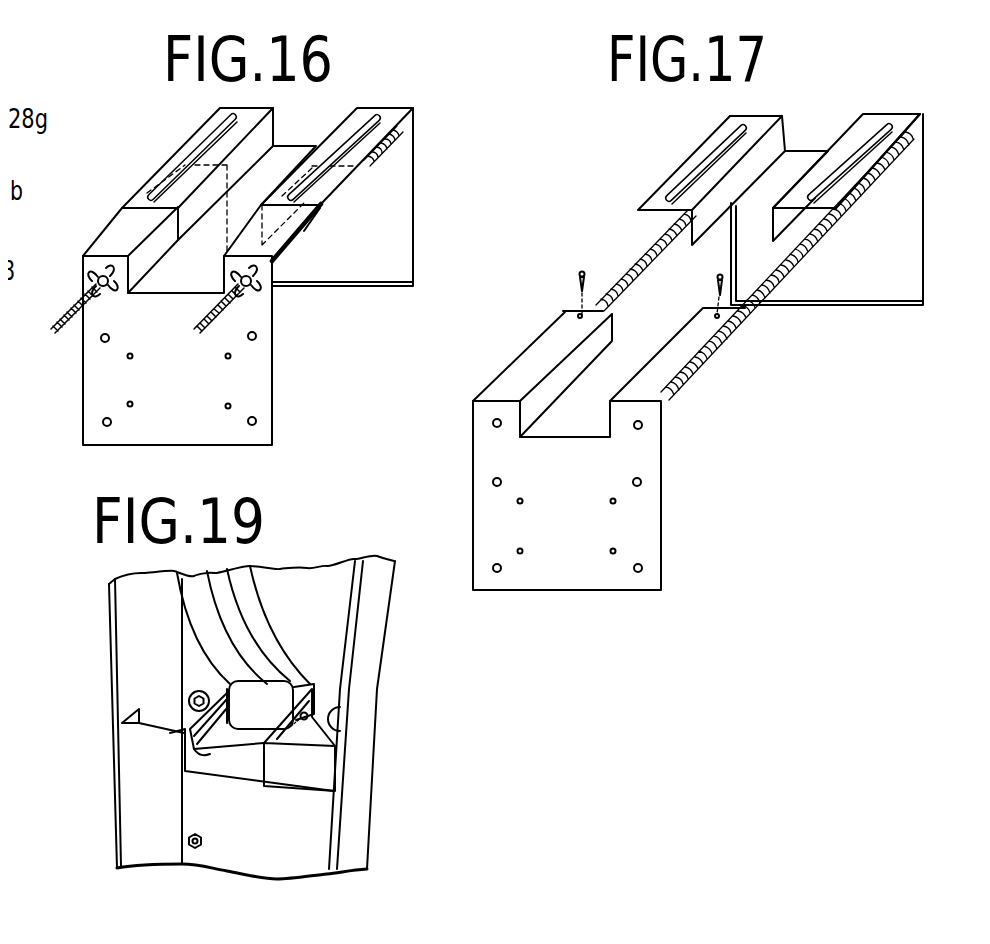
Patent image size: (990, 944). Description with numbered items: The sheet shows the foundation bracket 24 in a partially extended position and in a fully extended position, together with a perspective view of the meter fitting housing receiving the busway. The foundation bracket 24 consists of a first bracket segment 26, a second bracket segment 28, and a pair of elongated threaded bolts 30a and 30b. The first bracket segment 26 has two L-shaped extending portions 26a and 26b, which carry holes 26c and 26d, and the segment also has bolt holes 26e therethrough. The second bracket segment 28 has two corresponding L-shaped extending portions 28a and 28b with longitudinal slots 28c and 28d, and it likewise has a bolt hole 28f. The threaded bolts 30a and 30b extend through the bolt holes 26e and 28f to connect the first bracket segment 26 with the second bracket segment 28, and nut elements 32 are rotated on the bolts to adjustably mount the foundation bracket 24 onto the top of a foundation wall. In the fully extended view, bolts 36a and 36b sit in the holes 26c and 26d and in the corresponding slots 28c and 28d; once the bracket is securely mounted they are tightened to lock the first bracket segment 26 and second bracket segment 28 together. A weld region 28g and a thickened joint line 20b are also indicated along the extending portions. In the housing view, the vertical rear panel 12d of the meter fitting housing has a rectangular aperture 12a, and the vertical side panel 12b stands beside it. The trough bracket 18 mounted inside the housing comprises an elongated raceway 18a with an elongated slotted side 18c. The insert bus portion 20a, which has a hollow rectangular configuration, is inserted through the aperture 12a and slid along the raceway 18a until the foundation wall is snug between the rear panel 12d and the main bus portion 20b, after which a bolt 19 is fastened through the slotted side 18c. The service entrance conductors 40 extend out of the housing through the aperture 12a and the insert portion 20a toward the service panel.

In FIG. 19, the rectangular aperture 12a is at (297, 690).
In FIG. 19, the vertical side panel 12b is at (155, 672).
In FIG. 19, the vertical rear panel 12d is at (282, 850).
In FIG. 19, the trough bracket 18 is at (155, 750).
In FIG. 19, the elongated raceway 18a is at (247, 758).
In FIG. 19, the elongated slotted side 18c is at (280, 741).
In FIG. 19, the bolt 19 is at (307, 719).
In FIG. 19, the insert bus portion 20a is at (277, 711).
In FIG. 16, the main bus portion 20b is at (264, 262).
In FIG. 16, the foundation bracket 24 is at (139, 185).
In FIG. 16, the first bracket segment 26 is at (248, 372).
In FIG. 17, the first bracket segment 26 is at (490, 472).
In FIG. 16, the L-shaped extending portion 26a is at (115, 243).
In FIG. 17, the L-shaped extending portion 26a is at (533, 380).
In FIG. 17, the L-shaped extending portion 26b is at (683, 358).
In FIG. 17, the hole 26c is at (573, 317).
In FIG. 17, the hole 26d is at (718, 320).
In FIG. 17, the bolt hole 26e is at (640, 428).
In FIG. 16, the second bracket segment 28 is at (390, 210).
In FIG. 17, the second bracket segment 28 is at (900, 237).
In FIG. 17, the L-shaped extending portion 28a is at (890, 130).
In FIG. 17, the L-shaped extending portion 28b is at (755, 133).
In FIG. 17, the longitudinal slot 28c is at (712, 170).
In FIG. 17, the longitudinal slot 28d is at (881, 167).
In FIG. 17, the bolt hole 28f is at (758, 122).
In FIG. 16, the weld seam 28g is at (398, 135).
In FIG. 17, the weld seam 28g is at (910, 140).
In FIG. 17, the elongated threaded bolt 30a is at (640, 270).
In FIG. 16, the elongated threaded bolt 30b is at (304, 233).
In FIG. 17, the elongated threaded bolt 30b is at (812, 252).
In FIG. 16, the nut elements 32 is at (108, 294).
In FIG. 17, the bolt 36a is at (583, 273).
In FIG. 17, the bolt 36b is at (717, 277).
In FIG. 19, the service entrance conductors 40 is at (259, 608).